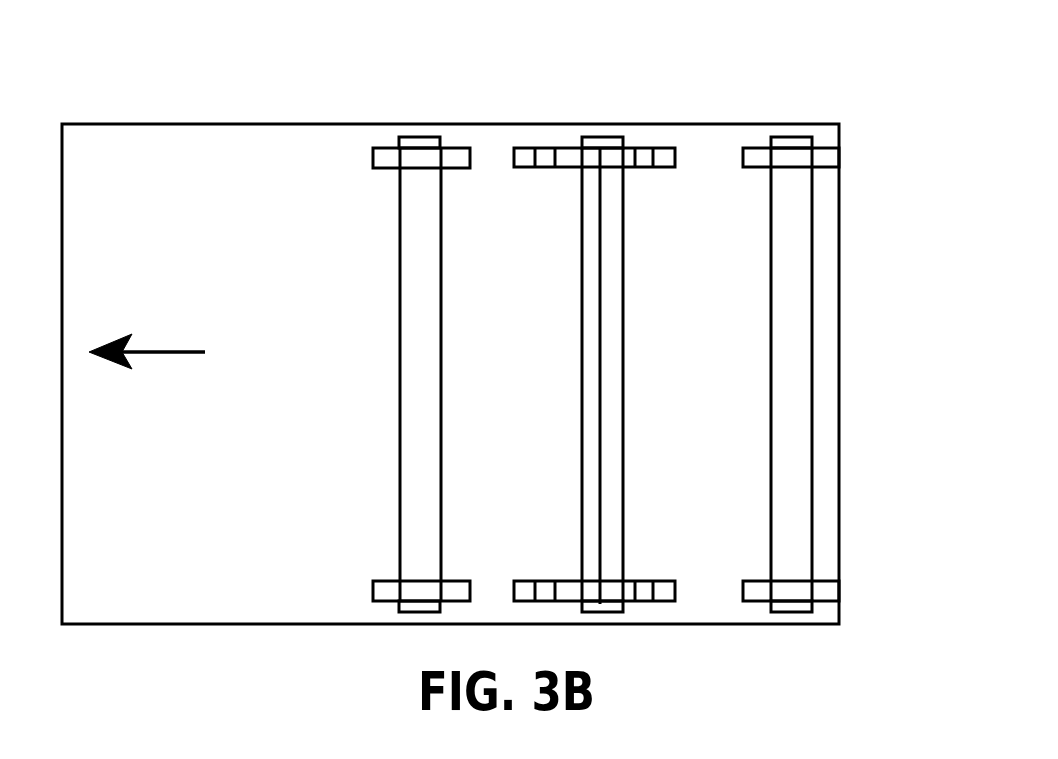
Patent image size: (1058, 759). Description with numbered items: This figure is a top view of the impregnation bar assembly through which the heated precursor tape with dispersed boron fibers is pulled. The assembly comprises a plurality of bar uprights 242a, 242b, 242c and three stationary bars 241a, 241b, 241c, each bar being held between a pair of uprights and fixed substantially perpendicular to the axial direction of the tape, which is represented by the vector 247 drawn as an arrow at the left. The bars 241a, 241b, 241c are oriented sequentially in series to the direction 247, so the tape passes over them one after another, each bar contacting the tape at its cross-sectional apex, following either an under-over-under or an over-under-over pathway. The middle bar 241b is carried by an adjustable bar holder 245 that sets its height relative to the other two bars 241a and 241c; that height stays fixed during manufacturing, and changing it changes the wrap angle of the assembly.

The stationary bar 241a is at (735, 374).
The middle stationary bar 241b is at (545, 376).
The stationary bar 241c is at (364, 374).
The bar upright 242a is at (843, 334).
The bar upright 242b is at (545, 335).
The bar upright 242c is at (369, 336).
The adjustable bar holder 245 is at (599, 330).
The direction vector of precursor tape 247 is at (175, 365).